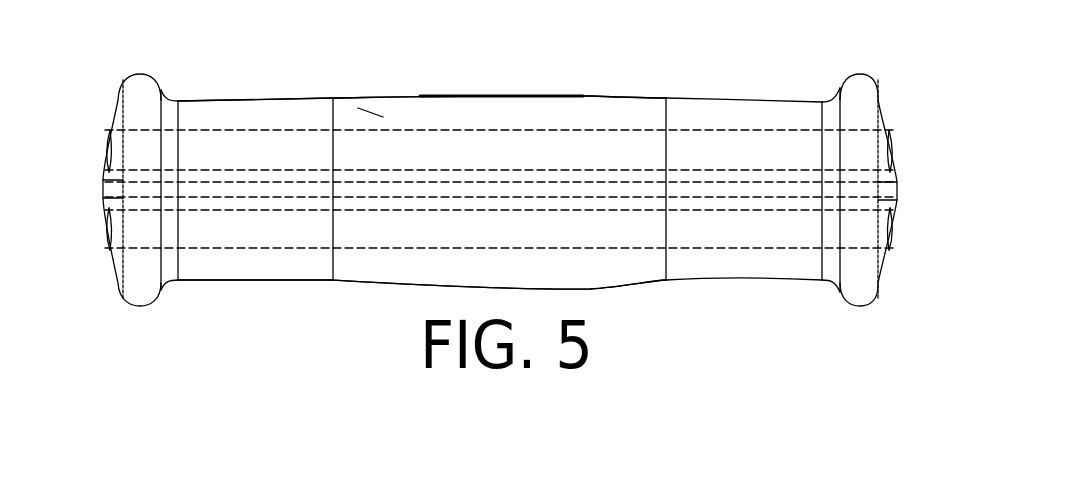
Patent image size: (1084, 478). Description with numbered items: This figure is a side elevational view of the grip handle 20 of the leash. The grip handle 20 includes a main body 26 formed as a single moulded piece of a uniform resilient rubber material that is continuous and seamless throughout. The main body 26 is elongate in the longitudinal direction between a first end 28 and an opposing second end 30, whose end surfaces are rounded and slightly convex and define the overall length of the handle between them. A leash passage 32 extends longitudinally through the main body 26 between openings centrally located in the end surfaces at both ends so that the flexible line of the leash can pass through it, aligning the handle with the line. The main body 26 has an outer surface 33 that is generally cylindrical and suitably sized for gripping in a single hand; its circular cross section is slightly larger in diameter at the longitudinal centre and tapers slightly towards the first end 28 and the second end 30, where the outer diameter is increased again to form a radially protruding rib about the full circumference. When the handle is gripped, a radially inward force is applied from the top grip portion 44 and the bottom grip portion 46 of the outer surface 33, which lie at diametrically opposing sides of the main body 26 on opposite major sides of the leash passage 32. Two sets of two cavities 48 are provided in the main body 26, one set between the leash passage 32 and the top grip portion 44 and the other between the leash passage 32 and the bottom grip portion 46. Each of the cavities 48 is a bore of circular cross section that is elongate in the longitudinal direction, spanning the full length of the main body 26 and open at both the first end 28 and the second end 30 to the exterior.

The grip handle 20 is at (268, 60).
The main body 26 is at (611, 103).
The first end 28 is at (115, 260).
The second end 30 is at (888, 265).
The leash passage 32 is at (718, 183).
The outer surface 33 is at (373, 113).
The top grip portion 44 is at (572, 85).
The bottom grip portion 46 is at (658, 285).
The cavities 48 is at (215, 130).